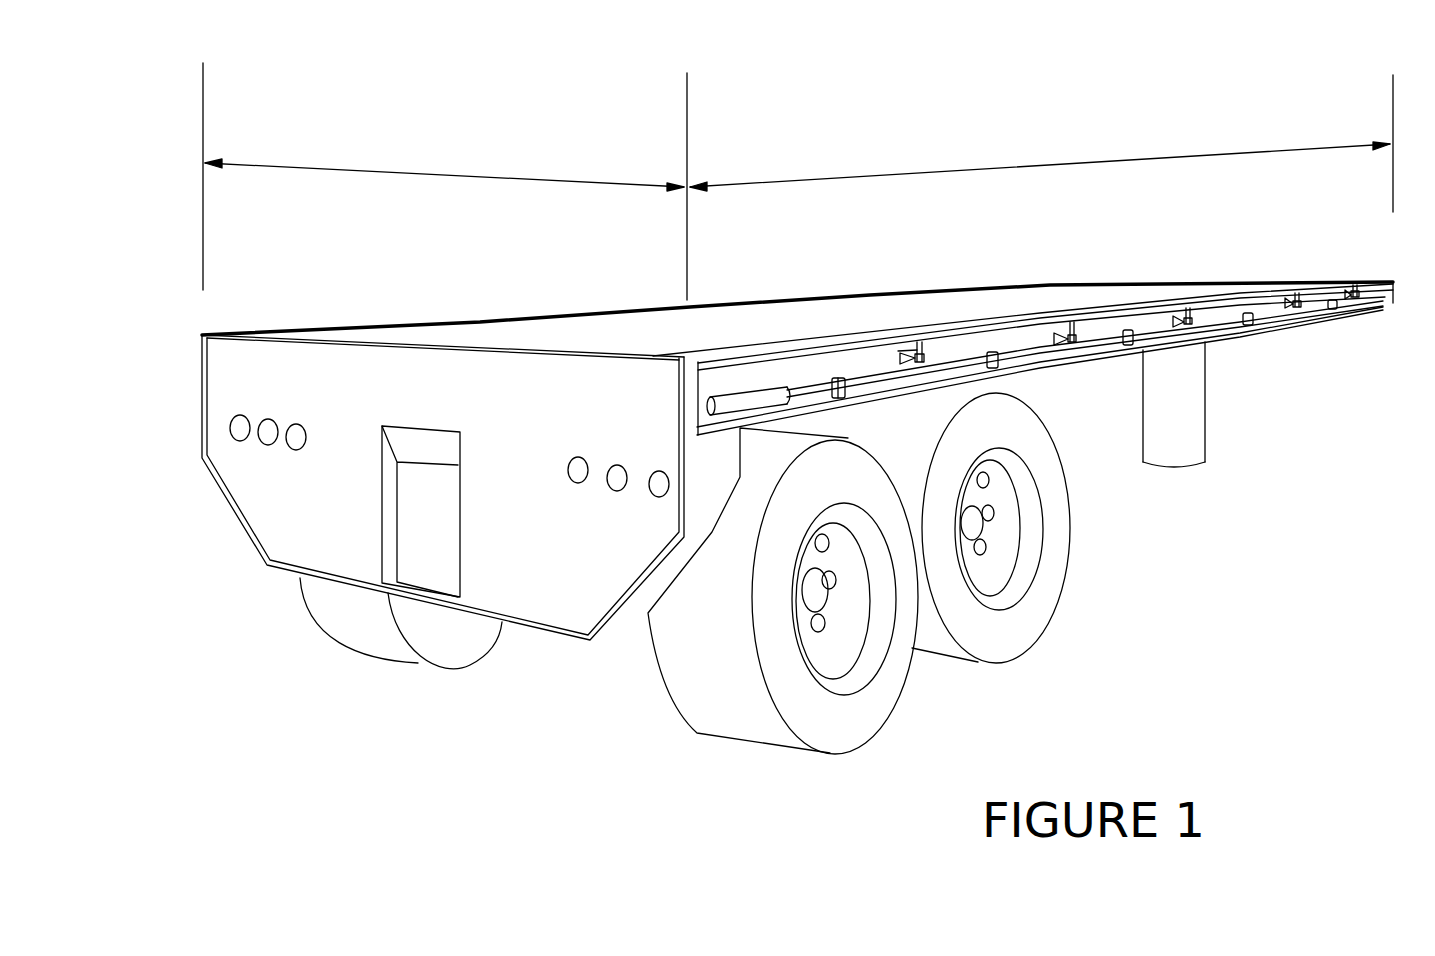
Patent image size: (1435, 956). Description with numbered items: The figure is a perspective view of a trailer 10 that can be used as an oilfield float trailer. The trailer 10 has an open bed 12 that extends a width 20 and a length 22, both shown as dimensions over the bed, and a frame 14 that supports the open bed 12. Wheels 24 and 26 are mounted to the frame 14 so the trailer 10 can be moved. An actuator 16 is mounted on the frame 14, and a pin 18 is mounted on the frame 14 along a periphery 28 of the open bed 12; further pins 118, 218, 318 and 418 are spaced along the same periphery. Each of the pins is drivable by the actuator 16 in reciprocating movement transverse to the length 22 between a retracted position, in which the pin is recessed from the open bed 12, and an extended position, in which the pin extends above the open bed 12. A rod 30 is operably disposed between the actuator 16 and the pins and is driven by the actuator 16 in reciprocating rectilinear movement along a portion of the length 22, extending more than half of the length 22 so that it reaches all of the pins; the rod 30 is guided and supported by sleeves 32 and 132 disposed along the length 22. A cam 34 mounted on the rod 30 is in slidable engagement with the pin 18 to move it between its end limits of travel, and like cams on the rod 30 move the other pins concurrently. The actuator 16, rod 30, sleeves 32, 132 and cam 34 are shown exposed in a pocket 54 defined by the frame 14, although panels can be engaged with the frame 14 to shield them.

The trailer 10 is at (275, 738).
The open bed 12 is at (547, 332).
The frame 14 is at (1130, 575).
The actuator 16 is at (765, 397).
The pin 18 is at (920, 335).
The pin 118 is at (1070, 322).
The pin 218 is at (1190, 305).
The pin 318 is at (1295, 293).
The pin 418 is at (1360, 288).
The width 20 is at (370, 168).
The length 22 is at (963, 165).
The wheel 24 is at (825, 718).
The wheel 26 is at (1010, 625).
The periphery 28 is at (1322, 323).
The rod 30 is at (1147, 333).
The sleeve 32 is at (845, 395).
The sleeve 132 is at (1003, 368).
The cam 34 is at (903, 358).
The pocket 54 is at (1202, 313).